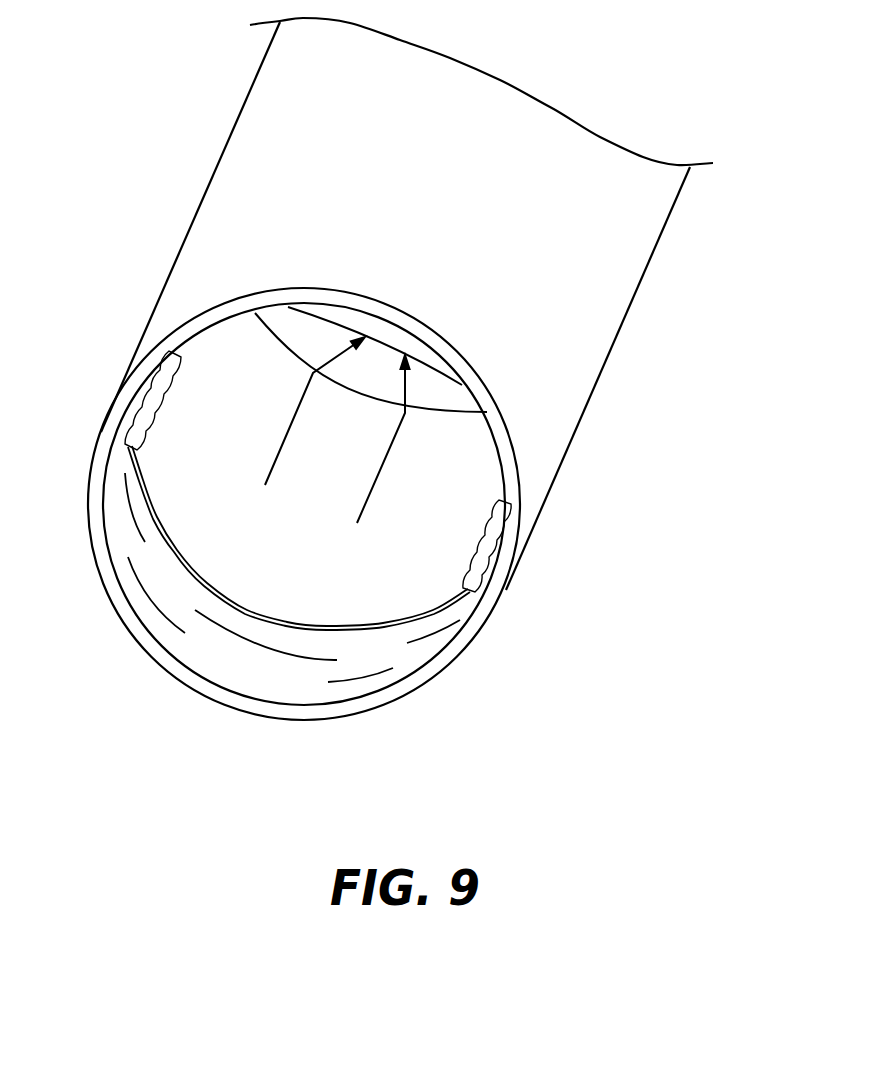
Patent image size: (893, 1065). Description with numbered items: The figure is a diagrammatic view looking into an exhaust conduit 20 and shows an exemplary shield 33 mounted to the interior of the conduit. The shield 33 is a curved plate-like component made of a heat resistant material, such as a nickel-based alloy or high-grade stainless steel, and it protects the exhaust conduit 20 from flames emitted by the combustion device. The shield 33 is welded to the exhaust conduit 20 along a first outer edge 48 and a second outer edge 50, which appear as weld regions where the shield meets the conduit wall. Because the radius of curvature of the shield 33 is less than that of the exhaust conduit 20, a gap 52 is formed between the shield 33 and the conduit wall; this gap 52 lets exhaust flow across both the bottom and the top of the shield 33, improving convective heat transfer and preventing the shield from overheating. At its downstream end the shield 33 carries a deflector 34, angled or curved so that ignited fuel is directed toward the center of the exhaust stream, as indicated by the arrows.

The exhaust conduit 20 is at (627, 314).
The shield 33 is at (320, 551).
The deflector 34 is at (288, 337).
The first outer edge 48 is at (147, 400).
The second outer edge 50 is at (495, 552).
The gap 52 is at (271, 641).